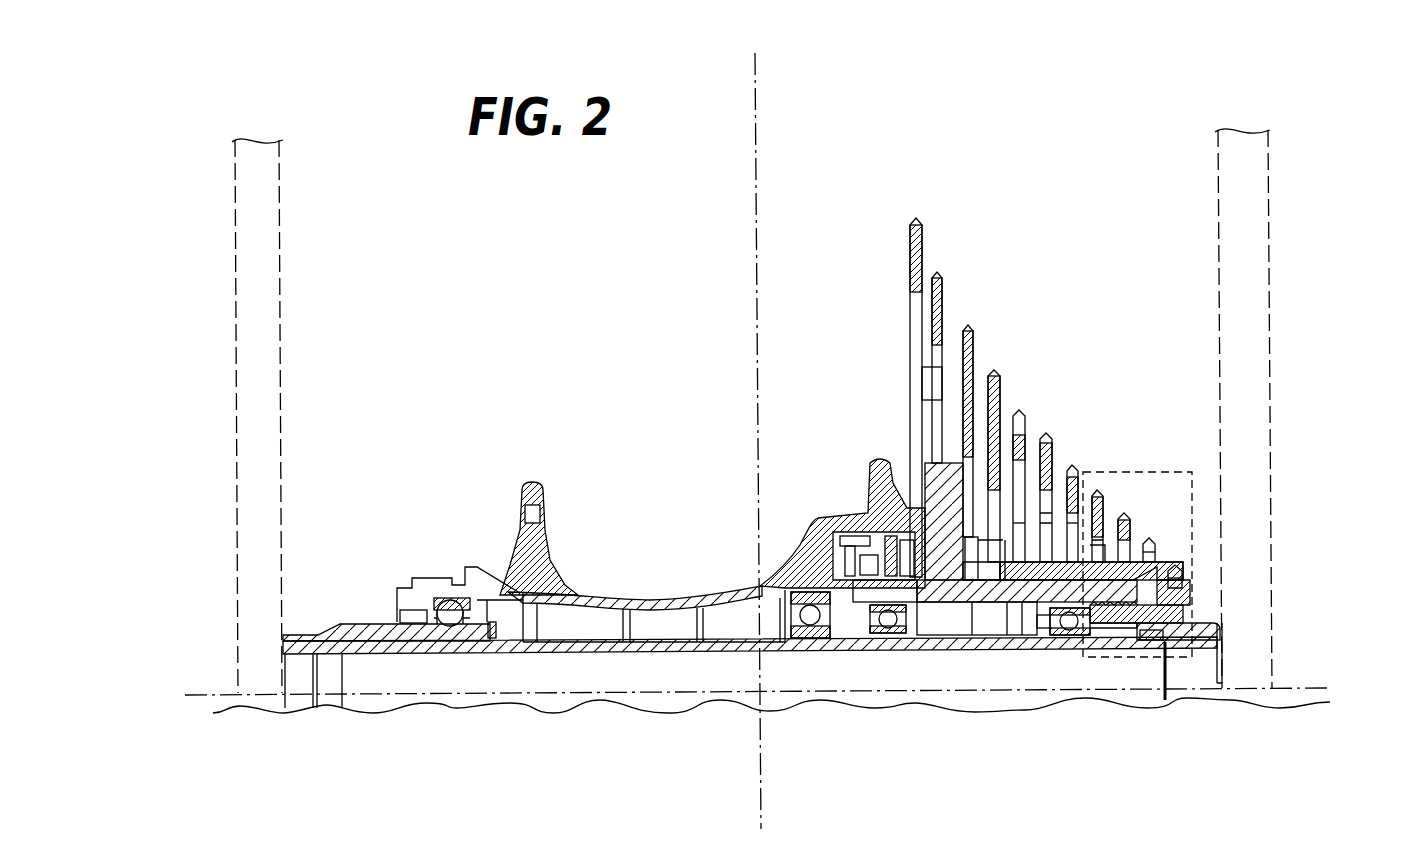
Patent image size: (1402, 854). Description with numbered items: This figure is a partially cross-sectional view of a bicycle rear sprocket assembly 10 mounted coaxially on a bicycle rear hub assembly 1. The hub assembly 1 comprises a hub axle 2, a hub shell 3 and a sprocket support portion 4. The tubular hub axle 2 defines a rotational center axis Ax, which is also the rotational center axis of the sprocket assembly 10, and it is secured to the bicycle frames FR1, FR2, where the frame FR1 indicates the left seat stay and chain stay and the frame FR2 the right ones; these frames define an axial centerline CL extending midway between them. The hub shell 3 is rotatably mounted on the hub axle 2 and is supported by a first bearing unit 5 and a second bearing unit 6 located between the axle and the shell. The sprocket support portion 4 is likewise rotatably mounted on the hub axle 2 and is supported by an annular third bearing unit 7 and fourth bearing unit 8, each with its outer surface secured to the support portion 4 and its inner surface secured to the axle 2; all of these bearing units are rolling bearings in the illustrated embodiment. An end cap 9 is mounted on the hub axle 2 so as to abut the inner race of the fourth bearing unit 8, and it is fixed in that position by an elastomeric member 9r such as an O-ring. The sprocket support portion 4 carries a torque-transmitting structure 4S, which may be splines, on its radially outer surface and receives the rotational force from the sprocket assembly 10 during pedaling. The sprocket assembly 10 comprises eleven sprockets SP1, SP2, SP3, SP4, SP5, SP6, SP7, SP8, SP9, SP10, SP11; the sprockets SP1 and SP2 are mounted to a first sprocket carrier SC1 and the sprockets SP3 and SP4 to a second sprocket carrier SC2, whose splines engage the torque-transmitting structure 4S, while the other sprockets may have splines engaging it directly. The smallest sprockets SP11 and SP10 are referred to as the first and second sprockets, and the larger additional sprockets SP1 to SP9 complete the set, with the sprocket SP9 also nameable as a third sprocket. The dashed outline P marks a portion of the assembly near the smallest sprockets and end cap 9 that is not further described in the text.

The bicycle rear hub assembly 1 is at (524, 478).
The hub axle 2 is at (408, 655).
The hub shell 3 is at (592, 592).
The sprocket support portion 4 is at (965, 636).
The torque-transmitting structure 4S is at (890, 525).
The first bearing unit 5 is at (467, 655).
The second bearing unit 6 is at (808, 585).
The third bearing unit 7 is at (918, 636).
The fourth bearing unit 8 is at (1043, 630).
The end cap 9 is at (1203, 640).
The elastomeric member 9r is at (1152, 640).
The bicycle rear sprocket assembly 10 is at (1063, 365).
The sprocket SP1 is at (915, 218).
The sprocket SP2 is at (938, 272).
The sprocket SP3 is at (967, 325).
The sprocket SP4 is at (993, 370).
The sprocket SP5 is at (1019, 410).
The sprocket SP6 is at (1046, 433).
The sprocket SP7 is at (1073, 465).
The sprocket SP8 is at (1098, 490).
The sprocket SP9 is at (1124, 513).
The second sprocket SP10 is at (1150, 538).
The first sprocket SP11 is at (1176, 565).
The first sprocket carrier SC1 is at (960, 540).
The second sprocket carrier SC2 is at (910, 528).
The enlarged portion P is at (1192, 507).
The axial centerline CL is at (755, 80).
The bicycle frame FR1 is at (283, 167).
The bicycle frame FR2 is at (1268, 152).
The rotational center axis Ax is at (195, 692).